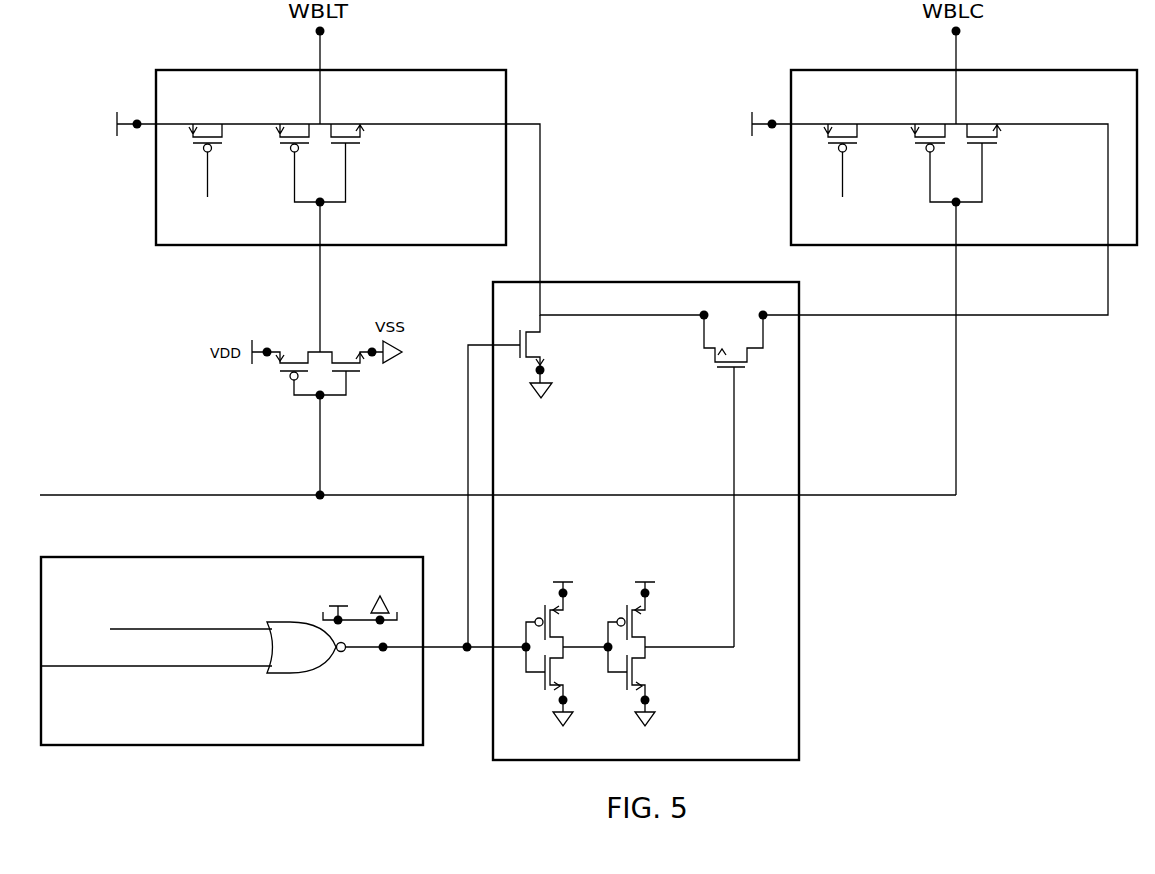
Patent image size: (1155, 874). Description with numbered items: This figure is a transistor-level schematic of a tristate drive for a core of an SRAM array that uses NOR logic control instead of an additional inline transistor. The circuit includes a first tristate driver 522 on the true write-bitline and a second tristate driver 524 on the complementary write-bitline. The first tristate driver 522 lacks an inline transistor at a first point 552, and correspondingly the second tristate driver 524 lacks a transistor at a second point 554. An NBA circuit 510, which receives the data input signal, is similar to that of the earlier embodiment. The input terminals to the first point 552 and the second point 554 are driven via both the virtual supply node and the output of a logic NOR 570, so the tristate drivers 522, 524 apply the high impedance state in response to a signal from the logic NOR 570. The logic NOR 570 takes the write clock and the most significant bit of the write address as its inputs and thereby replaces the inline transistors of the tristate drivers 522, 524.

The NBA circuit 510 is at (799, 582).
The first tristate driver 522 is at (196, 70).
The second tristate driver 524 is at (830, 70).
The first point 552 is at (418, 124).
The second point 554 is at (1053, 124).
The logic NOR 570 is at (392, 745).